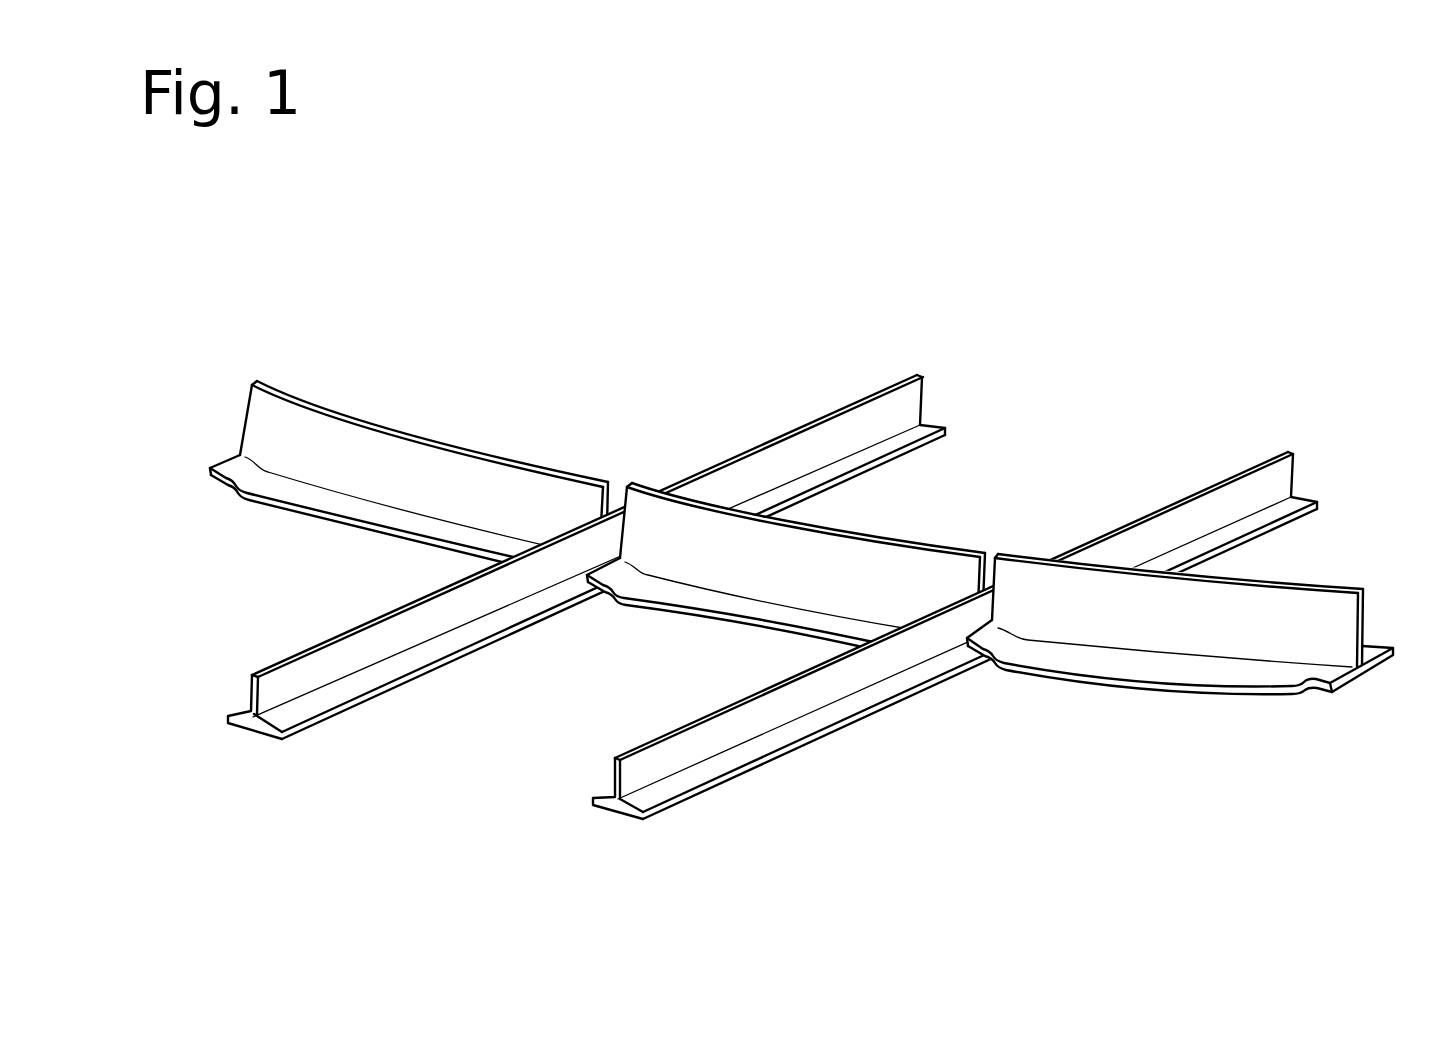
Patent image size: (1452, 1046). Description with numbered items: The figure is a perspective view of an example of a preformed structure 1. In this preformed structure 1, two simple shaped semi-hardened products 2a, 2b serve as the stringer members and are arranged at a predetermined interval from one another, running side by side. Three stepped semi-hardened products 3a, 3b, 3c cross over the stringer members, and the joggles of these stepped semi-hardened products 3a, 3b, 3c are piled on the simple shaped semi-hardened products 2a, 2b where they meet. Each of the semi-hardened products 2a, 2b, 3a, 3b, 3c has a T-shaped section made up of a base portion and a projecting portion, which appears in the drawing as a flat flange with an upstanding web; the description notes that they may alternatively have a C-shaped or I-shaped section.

The preformed structure 1 is at (628, 283).
The simple shaped semi-hardened product 2a is at (377, 648).
The simple shaped semi-hardened product 2b is at (847, 685).
The stepped semi-hardened product 3a is at (378, 466).
The stepped semi-hardened product 3b is at (698, 544).
The stepped semi-hardened product 3c is at (1082, 600).